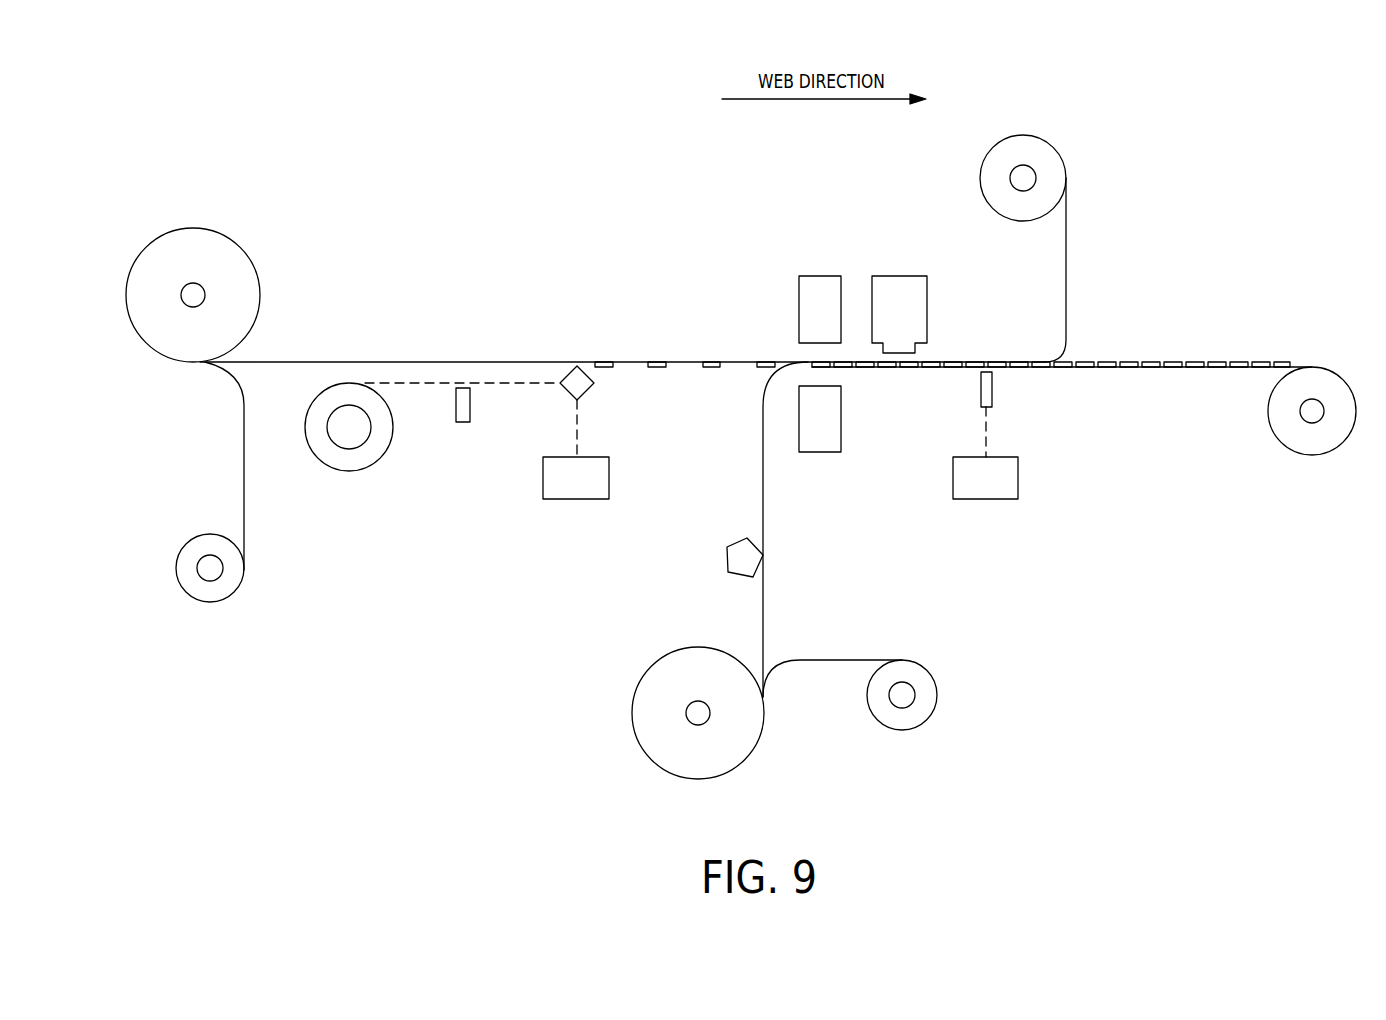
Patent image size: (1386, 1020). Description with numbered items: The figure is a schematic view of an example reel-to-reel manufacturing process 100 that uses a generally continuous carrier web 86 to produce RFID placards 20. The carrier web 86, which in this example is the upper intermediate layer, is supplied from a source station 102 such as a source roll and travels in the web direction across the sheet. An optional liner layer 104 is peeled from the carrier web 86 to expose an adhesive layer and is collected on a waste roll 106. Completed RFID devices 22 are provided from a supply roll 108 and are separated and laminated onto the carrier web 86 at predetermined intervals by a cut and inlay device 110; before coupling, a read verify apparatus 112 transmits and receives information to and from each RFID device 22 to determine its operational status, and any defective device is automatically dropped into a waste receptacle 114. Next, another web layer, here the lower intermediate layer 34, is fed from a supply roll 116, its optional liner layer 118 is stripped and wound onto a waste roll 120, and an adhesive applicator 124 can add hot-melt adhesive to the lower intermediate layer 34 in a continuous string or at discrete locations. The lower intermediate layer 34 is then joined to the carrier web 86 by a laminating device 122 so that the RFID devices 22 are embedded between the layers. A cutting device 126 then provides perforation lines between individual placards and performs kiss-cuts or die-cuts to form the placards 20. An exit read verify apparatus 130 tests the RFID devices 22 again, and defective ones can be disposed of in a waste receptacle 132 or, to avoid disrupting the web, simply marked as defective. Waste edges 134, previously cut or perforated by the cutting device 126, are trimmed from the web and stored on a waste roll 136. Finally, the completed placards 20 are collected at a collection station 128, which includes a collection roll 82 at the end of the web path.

The placard 20 is at (1204, 302).
The RFID device 22 is at (604, 367).
The lower intermediate layer 34 is at (763, 508).
The roll 82 is at (1310, 455).
The carrier web 86 is at (375, 361).
The manufacturing process 100 is at (543, 144).
The source station 102 is at (188, 232).
The liner layer 104 is at (244, 476).
The waste roll 106 is at (210, 602).
The supply roll 108 is at (347, 471).
The cut and inlay device 110 is at (563, 394).
The read verify apparatus 112 is at (463, 422).
The waste receptacle 114 is at (575, 499).
The supply roll 116 is at (636, 727).
The liner layer 118 is at (847, 660).
The waste roll 120 is at (937, 697).
The laminating device 122 is at (822, 277).
The adhesive applicator 124 is at (727, 560).
The cutting device 126 is at (898, 277).
The collection station 128 is at (1209, 473).
The exit read verify apparatus 130 is at (992, 392).
The waste receptacle 132 is at (987, 499).
The waste edges 134 is at (1066, 272).
The waste roll 136 is at (1032, 140).